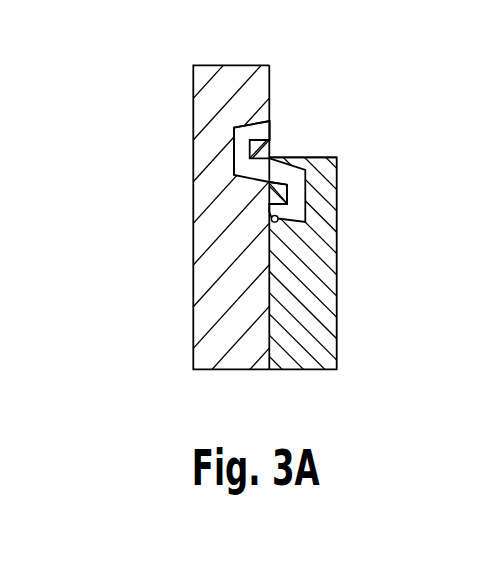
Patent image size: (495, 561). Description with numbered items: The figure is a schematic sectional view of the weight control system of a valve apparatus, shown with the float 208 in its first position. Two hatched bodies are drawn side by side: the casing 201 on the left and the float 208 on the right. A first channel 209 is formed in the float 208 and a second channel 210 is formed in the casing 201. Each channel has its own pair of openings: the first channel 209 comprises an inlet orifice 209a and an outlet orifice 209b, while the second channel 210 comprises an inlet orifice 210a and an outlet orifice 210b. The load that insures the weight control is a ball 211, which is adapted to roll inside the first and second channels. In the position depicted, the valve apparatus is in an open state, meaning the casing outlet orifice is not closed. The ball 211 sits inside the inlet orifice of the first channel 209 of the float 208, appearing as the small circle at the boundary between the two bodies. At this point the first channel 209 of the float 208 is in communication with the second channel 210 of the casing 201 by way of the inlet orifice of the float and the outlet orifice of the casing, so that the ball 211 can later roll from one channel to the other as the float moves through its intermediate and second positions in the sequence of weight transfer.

The casing 201 is at (208, 290).
The float 208 is at (317, 264).
The first channel 209 is at (319, 188).
The inlet orifice 209a is at (319, 148).
The outlet orifice 209b is at (326, 225).
The second channel 210 is at (220, 152).
The inlet orifice 210a is at (248, 108).
The outlet orifice 210b is at (244, 191).
The ball 211 is at (257, 225).